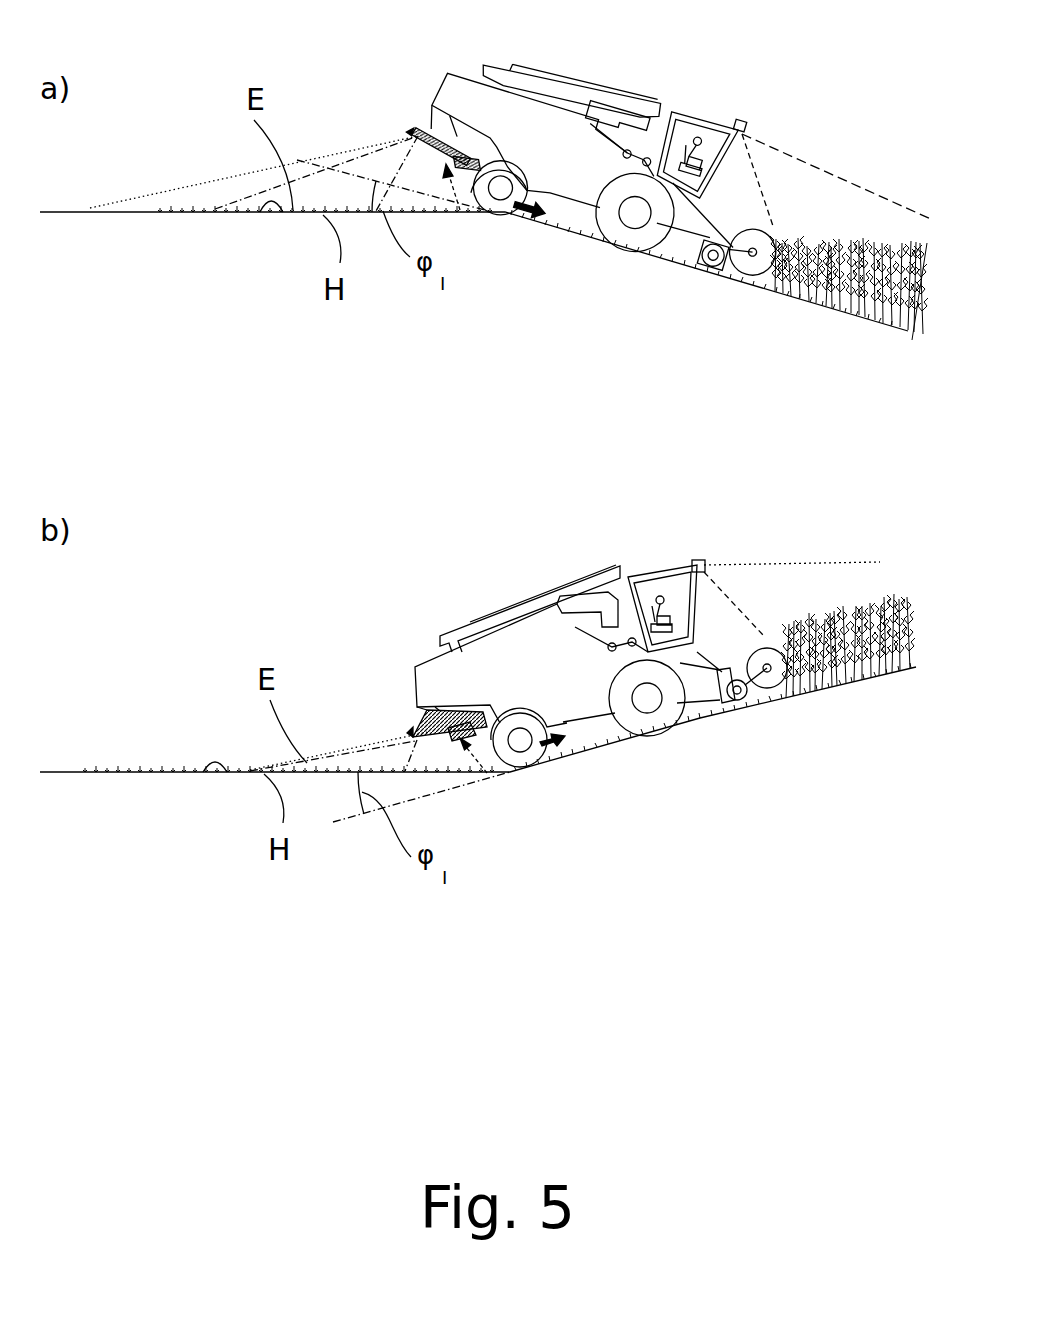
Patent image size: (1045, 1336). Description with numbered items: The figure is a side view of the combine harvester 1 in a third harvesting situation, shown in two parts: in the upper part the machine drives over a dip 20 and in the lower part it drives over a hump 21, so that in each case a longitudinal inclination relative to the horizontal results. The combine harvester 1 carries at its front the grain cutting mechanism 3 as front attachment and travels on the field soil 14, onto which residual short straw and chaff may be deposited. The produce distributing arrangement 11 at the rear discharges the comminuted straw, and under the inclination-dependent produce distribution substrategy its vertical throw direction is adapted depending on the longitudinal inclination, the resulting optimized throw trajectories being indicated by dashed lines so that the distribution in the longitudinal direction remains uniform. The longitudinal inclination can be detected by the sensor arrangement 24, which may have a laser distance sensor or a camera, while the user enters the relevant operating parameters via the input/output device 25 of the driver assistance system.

The combine harvester 1 is at (569, 156).
The grain cutting mechanism 3 is at (777, 221).
The produce distributing arrangement 11 is at (463, 214).
The field soil 14 is at (272, 205).
The dip 20 is at (346, 104).
The hump 21 is at (330, 646).
The sensor arrangement 24 is at (743, 128).
The input/output device 25 is at (701, 125).